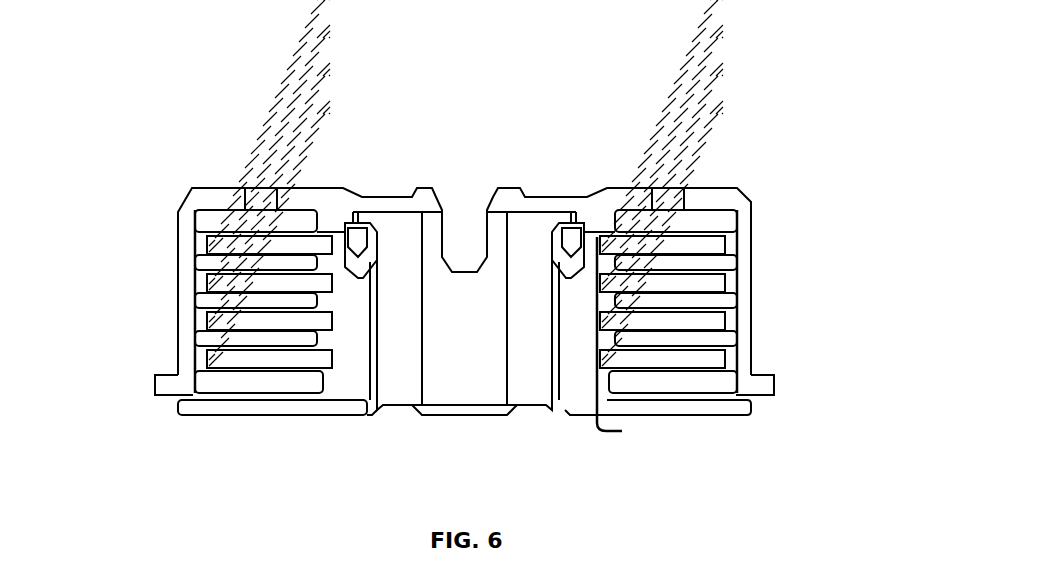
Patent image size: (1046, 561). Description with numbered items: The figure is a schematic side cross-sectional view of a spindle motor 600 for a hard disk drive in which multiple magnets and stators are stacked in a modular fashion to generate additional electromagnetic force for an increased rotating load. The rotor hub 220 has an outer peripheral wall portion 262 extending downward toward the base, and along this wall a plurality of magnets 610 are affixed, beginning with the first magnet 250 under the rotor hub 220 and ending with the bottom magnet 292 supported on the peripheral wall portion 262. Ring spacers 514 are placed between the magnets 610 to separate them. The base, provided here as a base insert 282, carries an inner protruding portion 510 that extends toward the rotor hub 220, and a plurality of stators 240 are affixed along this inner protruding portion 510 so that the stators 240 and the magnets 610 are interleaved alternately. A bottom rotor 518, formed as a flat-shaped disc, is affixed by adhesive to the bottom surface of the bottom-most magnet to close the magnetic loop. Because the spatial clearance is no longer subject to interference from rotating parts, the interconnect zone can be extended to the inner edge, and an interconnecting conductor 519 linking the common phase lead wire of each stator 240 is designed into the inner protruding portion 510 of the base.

The spindle motor 600 is at (690, 71).
The rotor hub 220 is at (752, 196).
The peripheral wall portion 262 is at (747, 230).
The first magnet 250 is at (231, 212).
The stator 240 is at (289, 232).
The magnets 610 is at (197, 374).
The ring spacer 514 is at (735, 360).
The inner protruding portion 510 is at (349, 379).
The base insert 282 is at (568, 413).
The bottom magnet 292 is at (217, 377).
The bottom rotor 518 is at (697, 393).
The interconnecting conductor 519 is at (600, 427).